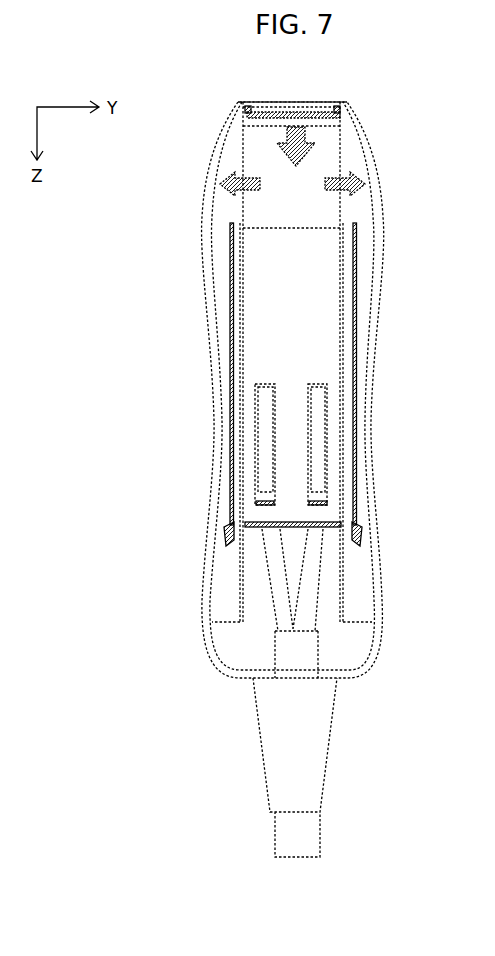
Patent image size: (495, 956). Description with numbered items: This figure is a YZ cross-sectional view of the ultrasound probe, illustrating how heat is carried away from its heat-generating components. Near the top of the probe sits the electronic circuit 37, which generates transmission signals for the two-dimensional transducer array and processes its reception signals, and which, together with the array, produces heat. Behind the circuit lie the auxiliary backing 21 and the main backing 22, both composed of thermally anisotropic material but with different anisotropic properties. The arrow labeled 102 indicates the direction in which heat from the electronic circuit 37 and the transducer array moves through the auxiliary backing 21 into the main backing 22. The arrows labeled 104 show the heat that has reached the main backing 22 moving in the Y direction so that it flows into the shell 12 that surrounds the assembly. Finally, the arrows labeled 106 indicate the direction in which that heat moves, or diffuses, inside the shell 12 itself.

The shell 12 is at (372, 230).
The auxiliary backing 21 is at (340, 122).
The main backing 22 is at (340, 146).
The electronic circuit 37 is at (306, 113).
The direction of heat movement 102 is at (287, 135).
The heat movement in the Y direction 104 is at (350, 190).
The direction of heat movement inside the shell 106 is at (356, 327).